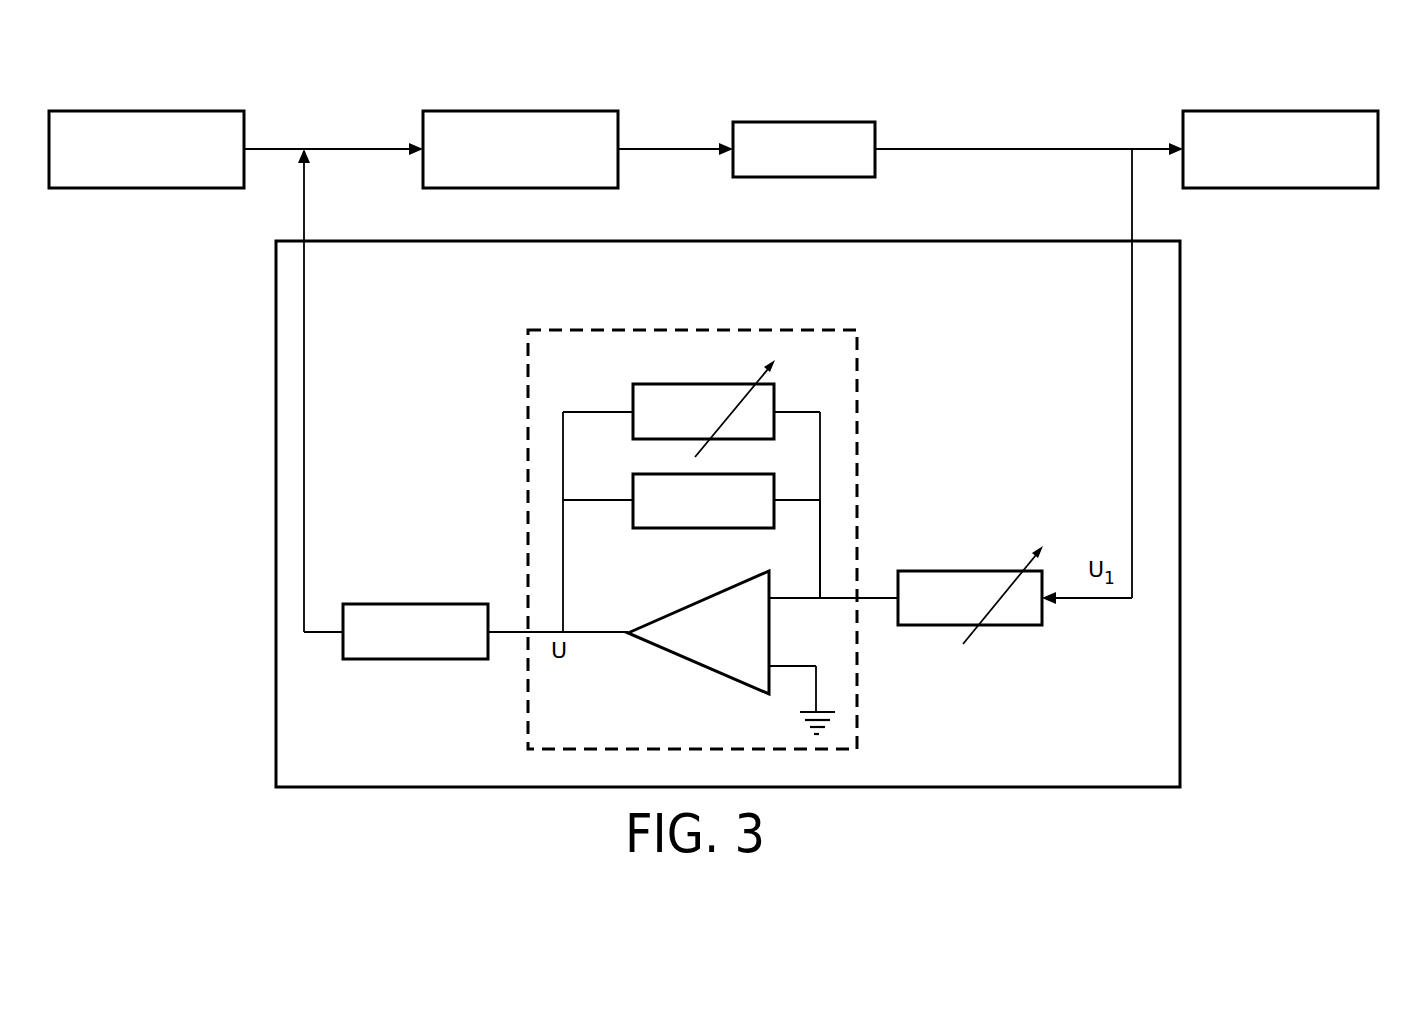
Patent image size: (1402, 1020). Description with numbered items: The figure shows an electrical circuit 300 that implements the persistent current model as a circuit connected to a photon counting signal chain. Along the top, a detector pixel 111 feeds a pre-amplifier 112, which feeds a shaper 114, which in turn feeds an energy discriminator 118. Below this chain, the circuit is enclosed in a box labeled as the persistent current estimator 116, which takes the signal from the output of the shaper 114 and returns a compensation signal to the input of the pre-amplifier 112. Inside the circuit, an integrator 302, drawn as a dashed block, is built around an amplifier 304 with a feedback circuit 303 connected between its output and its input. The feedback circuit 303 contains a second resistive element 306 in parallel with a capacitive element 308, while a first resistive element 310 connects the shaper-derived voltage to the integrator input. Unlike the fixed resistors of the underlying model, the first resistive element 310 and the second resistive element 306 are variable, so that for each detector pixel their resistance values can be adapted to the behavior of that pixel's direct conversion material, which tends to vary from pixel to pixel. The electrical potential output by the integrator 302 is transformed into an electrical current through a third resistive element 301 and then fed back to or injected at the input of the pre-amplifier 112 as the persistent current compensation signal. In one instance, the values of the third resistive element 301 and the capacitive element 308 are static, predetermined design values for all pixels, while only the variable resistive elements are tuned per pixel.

The detector pixel 111 is at (222, 118).
The pre-amplifier 112 is at (590, 118).
The shaper 114 is at (855, 130).
The energy discriminator 118 is at (1203, 118).
The electrical circuit 300 is at (352, 321).
The feedback path / current compensation path 116 is at (278, 473).
The third resistive element 301 is at (367, 608).
The integrator 302 is at (852, 429).
The feedback circuit 303 is at (824, 532).
The amplifier A 304 is at (667, 638).
The second resistive element 306 is at (765, 398).
The capacitive element 308 is at (647, 518).
The first resistive element 310 is at (1017, 618).